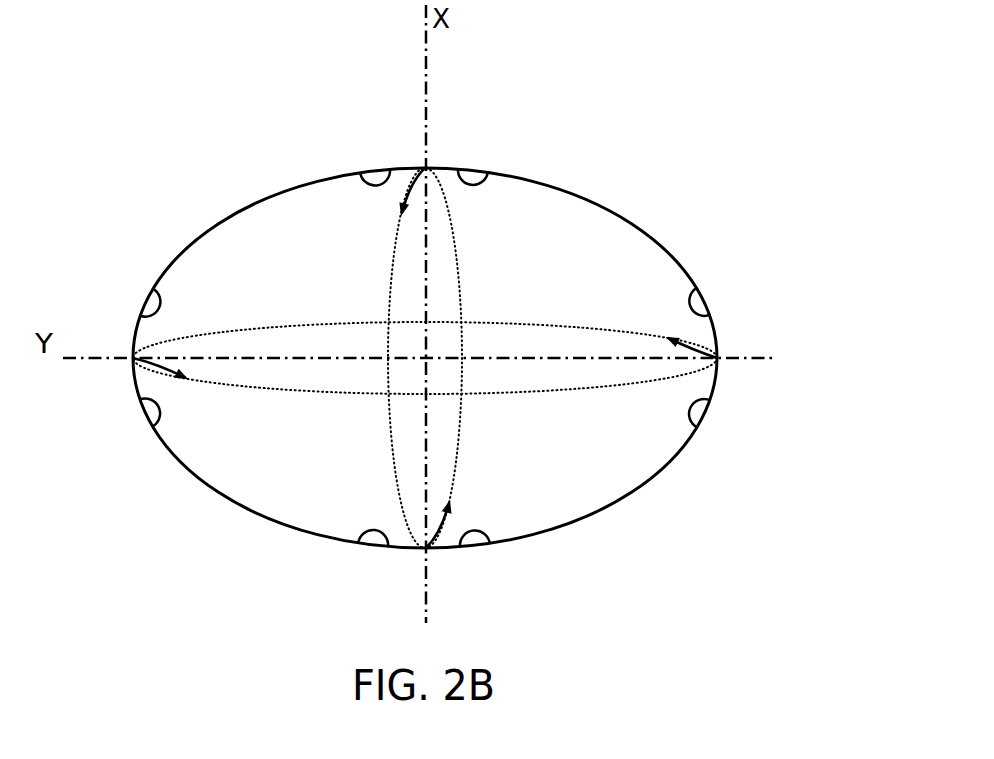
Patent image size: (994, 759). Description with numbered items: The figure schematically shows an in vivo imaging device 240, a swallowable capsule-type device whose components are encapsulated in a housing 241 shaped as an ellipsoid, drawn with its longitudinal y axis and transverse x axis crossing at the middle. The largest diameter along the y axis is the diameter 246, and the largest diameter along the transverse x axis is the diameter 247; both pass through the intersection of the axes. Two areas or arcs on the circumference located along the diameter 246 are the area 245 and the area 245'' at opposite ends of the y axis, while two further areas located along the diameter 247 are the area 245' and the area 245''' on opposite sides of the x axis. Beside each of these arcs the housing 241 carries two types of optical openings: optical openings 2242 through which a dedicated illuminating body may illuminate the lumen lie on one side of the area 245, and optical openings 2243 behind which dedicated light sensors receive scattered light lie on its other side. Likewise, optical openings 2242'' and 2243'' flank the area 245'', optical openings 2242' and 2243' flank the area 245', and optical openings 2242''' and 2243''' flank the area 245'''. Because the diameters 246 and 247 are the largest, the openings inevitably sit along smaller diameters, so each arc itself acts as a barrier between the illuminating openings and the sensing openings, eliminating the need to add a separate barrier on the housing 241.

The device 240 is at (727, 86).
The housing 241 is at (641, 228).
The area/arc 245 is at (390, 157).
The area/arc 245' is at (111, 381).
The area/arc 245'' is at (473, 555).
The area/arc 245''' is at (744, 338).
The largest diameter along the y axis 246 is at (444, 176).
The largest diameter along the transverse axis 247 is at (697, 371).
The optical openings 2242 is at (497, 210).
The optical openings 2243 is at (360, 210).
The optical openings 2242' is at (201, 298).
The optical openings 2243' is at (202, 415).
The optical openings 2242'' is at (345, 509).
The optical openings 2243'' is at (508, 509).
The optical openings 2242''' is at (644, 420).
The optical openings 2243''' is at (647, 297).